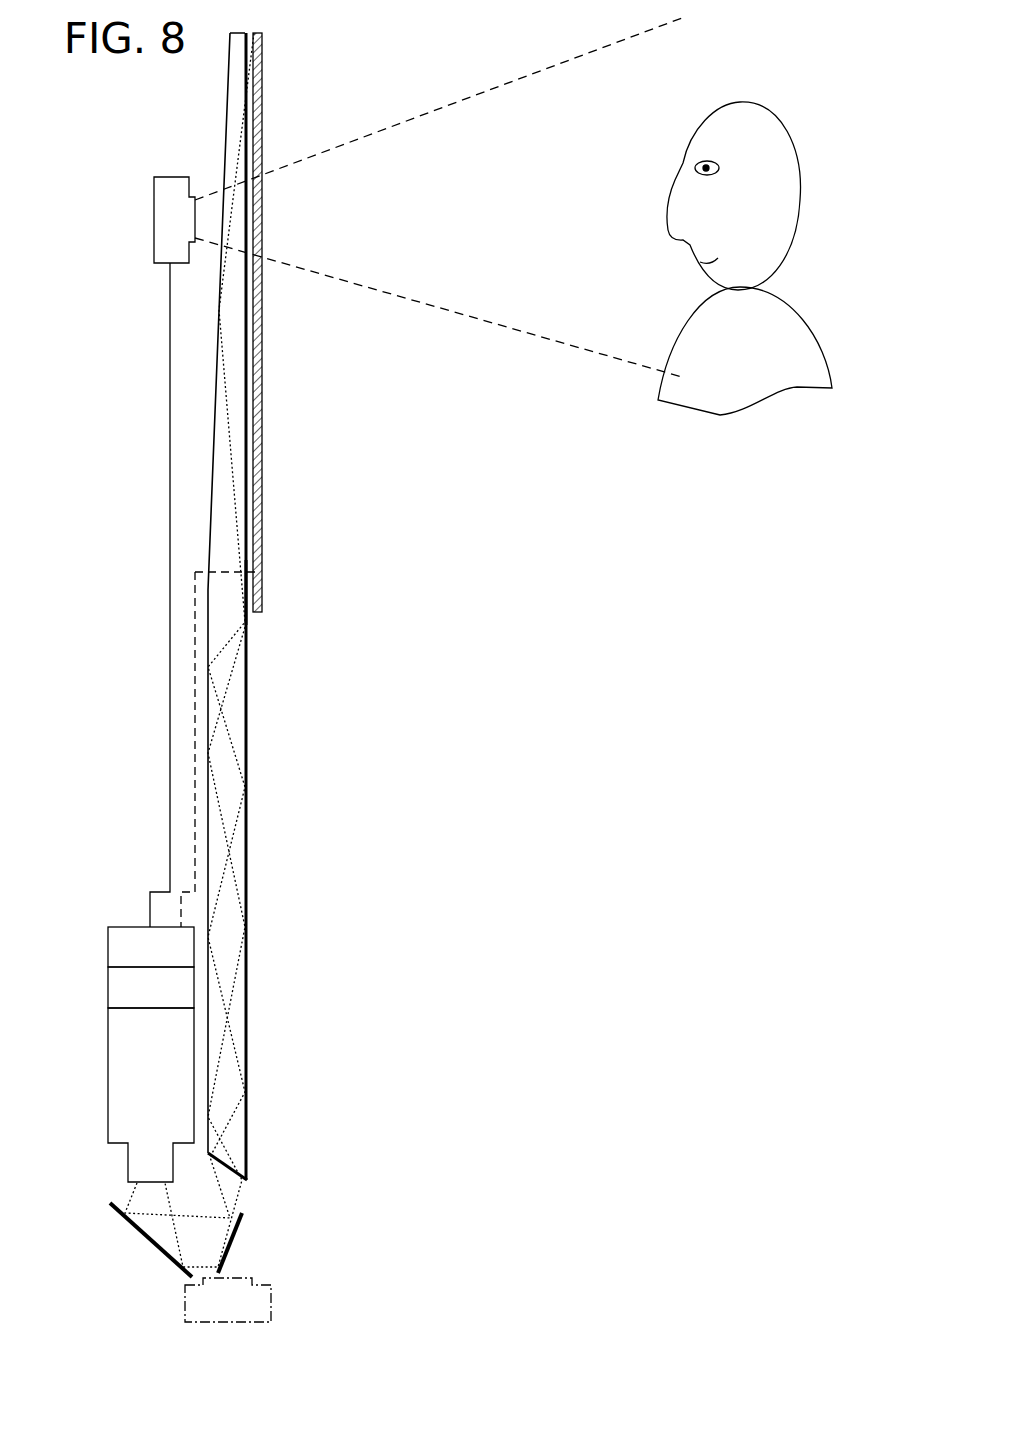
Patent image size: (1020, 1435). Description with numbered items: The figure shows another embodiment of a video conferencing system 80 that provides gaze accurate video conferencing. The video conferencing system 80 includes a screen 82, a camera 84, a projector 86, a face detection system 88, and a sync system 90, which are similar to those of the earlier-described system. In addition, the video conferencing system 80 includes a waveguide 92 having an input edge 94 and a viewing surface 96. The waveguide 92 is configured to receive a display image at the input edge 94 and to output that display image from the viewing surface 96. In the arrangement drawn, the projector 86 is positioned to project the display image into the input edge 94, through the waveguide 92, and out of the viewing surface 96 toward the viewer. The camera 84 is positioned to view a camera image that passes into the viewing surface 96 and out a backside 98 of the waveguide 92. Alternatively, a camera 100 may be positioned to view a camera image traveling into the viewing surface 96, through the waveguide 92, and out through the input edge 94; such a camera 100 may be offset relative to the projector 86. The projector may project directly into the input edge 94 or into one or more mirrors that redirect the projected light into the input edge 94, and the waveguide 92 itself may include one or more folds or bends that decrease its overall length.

The video conferencing system 80 is at (130, 142).
The screen 82 is at (258, 32).
The camera 84 is at (163, 233).
The projector 86 is at (140, 1083).
The face detection system 88 is at (140, 998).
The sync system 90 is at (140, 958).
The waveguide 92 is at (228, 88).
The input edge 94 is at (223, 1170).
The viewing surface 96 is at (248, 594).
The backside 98 is at (220, 270).
The camera 100 is at (211, 1316).